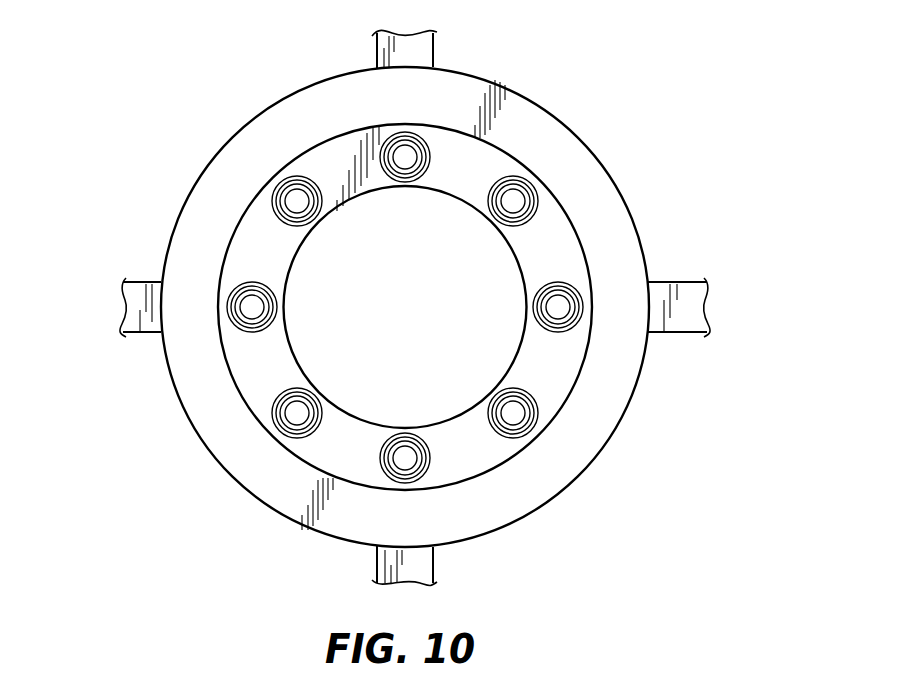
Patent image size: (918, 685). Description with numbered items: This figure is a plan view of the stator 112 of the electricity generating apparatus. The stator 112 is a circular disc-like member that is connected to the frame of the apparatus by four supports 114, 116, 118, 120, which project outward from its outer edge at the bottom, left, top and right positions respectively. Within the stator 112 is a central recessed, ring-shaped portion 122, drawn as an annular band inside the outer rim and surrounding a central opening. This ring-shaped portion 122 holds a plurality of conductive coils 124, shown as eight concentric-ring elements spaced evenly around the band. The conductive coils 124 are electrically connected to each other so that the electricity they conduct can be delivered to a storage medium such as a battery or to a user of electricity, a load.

The stator 112 is at (510, 110).
The support 114 is at (432, 560).
The support 116 is at (135, 302).
The support 118 is at (433, 48).
The support 120 is at (688, 302).
The central recessed ring-shaped portion 122 is at (565, 252).
The conductive coils 124 is at (264, 369).